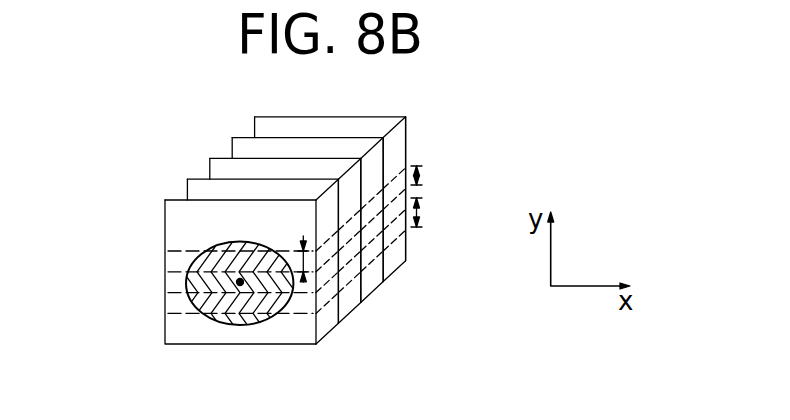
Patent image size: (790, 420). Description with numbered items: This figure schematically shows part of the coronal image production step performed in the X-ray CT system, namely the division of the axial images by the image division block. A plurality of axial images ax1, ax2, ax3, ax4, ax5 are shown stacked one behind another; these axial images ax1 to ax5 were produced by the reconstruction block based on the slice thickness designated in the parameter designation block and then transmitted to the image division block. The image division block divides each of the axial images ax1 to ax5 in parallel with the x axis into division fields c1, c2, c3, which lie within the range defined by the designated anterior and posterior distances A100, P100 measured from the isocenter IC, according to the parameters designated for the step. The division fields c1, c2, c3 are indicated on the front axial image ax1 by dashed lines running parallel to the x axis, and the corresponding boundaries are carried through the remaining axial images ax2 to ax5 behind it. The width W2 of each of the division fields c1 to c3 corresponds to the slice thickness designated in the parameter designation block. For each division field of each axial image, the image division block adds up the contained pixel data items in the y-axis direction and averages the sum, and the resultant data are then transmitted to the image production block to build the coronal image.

The axial image ax1 is at (316, 339).
The axial image ax2 is at (338, 316).
The axial image ax3 is at (361, 295).
The axial image ax4 is at (383, 272).
The axial image ax5 is at (406, 247).
The division field c1 is at (170, 262).
The division field c2 is at (170, 283).
The division field c3 is at (170, 307).
The isocenter IC is at (238, 280).
The width of division field W2 is at (302, 242).
The anterior distance A100 is at (420, 181).
The posterior distance P100 is at (420, 215).